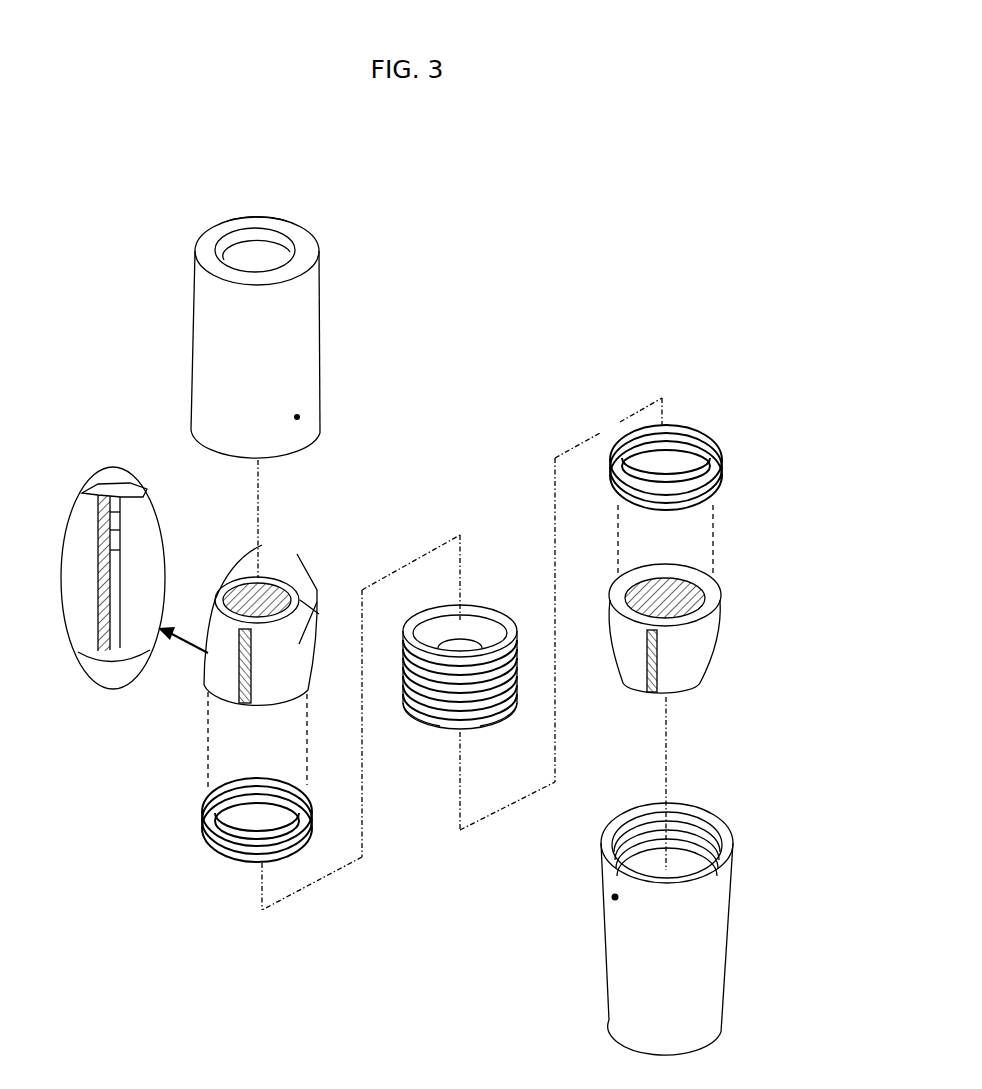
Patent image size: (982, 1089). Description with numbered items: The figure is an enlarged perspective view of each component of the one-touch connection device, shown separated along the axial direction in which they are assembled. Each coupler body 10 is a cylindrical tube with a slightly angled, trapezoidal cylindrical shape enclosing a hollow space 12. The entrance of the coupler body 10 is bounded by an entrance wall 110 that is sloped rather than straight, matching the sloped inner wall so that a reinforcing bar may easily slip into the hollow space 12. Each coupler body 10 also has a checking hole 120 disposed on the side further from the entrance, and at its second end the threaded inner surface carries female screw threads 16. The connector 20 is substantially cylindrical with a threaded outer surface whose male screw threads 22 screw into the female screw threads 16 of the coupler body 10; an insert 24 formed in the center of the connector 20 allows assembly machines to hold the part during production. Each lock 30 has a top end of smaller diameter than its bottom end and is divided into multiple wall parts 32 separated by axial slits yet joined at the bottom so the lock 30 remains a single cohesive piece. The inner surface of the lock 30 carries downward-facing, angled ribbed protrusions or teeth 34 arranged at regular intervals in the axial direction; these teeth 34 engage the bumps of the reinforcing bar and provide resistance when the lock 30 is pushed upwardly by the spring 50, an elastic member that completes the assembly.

The coupler body 10 is at (304, 334).
The hollow space 12 is at (250, 260).
The entrance wall 110 is at (267, 233).
The checking hole 120 is at (300, 416).
The wall parts 32 is at (268, 576).
The connector 20 is at (497, 616).
The male screw threads 22 is at (404, 714).
The insert 24 is at (512, 714).
The lock 30 is at (629, 638).
The ribbed protrusions or teeth 34 is at (651, 566).
The spring 50 is at (230, 858).
The female screw threads 16 is at (607, 834).